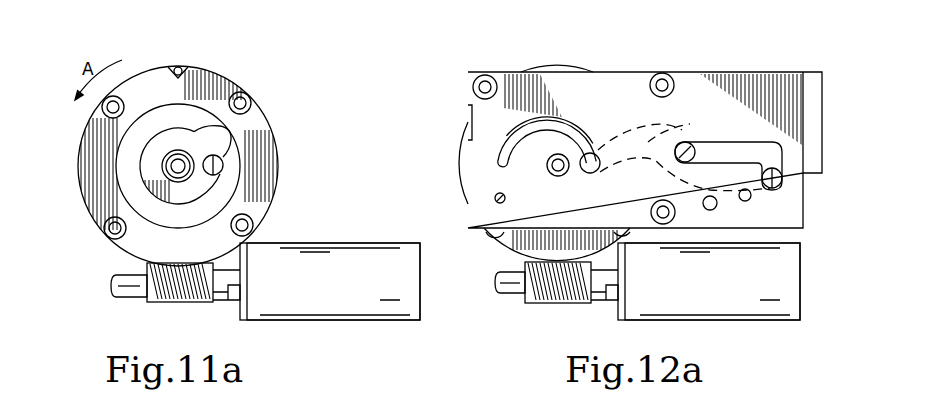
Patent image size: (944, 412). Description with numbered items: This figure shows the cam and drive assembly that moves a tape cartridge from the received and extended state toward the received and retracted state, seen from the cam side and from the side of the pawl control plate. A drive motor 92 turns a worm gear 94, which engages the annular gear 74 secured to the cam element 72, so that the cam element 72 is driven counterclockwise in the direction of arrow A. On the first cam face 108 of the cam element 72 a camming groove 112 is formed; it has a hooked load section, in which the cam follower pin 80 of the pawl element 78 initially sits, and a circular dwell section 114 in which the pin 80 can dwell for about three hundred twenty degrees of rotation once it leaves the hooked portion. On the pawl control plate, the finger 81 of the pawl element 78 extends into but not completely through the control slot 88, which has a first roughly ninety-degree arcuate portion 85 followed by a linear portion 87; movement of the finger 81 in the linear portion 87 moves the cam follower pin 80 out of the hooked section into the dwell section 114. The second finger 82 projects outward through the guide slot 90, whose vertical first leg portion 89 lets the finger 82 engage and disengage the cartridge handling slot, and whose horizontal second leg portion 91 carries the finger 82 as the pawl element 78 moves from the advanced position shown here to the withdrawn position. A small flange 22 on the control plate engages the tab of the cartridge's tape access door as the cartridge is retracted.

In FIG. 12A, the flange 22 is at (466, 118).
In FIG. 11A, the cam element 72 is at (86, 212).
In FIG. 12A, the cam element 72 is at (507, 247).
In FIG. 11A, the annular gear 74 is at (262, 220).
In FIG. 12A, the pawl element 78 is at (665, 133).
In FIG. 11A, the first cam follower 80 is at (214, 167).
In FIG. 12A, the finger 81 is at (590, 176).
In FIG. 12A, the second finger 82 is at (778, 188).
In FIG. 12A, the arcuate portion 85 is at (578, 132).
In FIG. 12A, the linear portion 87 is at (523, 170).
In FIG. 12A, the control slot 88 is at (537, 120).
In FIG. 12A, the first leg portion 89 is at (775, 165).
In FIG. 12A, the guide slot 90 is at (762, 148).
In FIG. 12A, the second leg portion 91 is at (738, 136).
In FIG. 11A, the drive motor 92 is at (351, 292).
In FIG. 12A, the drive motor 92 is at (717, 292).
In FIG. 11A, the worm gear 94 is at (182, 300).
In FIG. 12A, the worm gear 94 is at (545, 300).
In FIG. 11A, the first cam face 108 is at (250, 124).
In FIG. 11A, the camming groove 112 is at (210, 112).
In FIG. 11A, the circular dwell section 114 is at (140, 218).